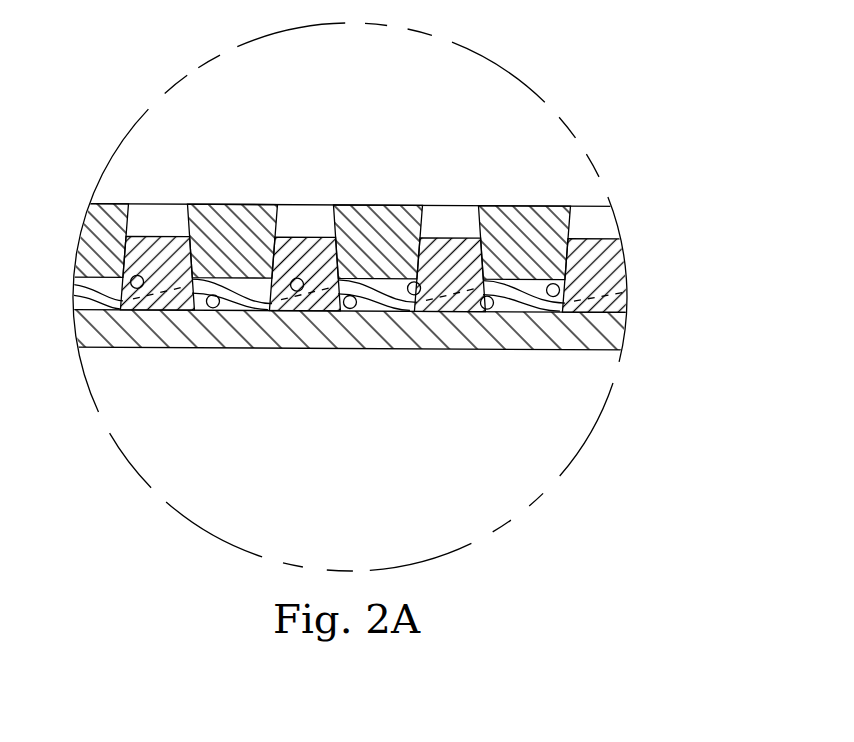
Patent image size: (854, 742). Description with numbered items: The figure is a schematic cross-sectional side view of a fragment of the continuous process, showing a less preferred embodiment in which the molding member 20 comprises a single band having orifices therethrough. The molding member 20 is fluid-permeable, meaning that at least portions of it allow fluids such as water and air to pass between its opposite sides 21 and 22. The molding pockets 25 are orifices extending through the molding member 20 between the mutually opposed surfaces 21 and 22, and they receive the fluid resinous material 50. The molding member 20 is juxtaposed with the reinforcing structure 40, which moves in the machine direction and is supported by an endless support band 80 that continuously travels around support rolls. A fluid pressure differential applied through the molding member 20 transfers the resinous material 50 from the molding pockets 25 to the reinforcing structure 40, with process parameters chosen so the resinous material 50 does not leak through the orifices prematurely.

The molding member 20 is at (371, 207).
The first side of the molding member 21 is at (390, 285).
The second side of the molding member 22 is at (518, 204).
The molding pockets 25 is at (307, 197).
The reinforcing structure 40 is at (213, 309).
The resinous material 50 is at (613, 236).
The support band 80 is at (442, 333).